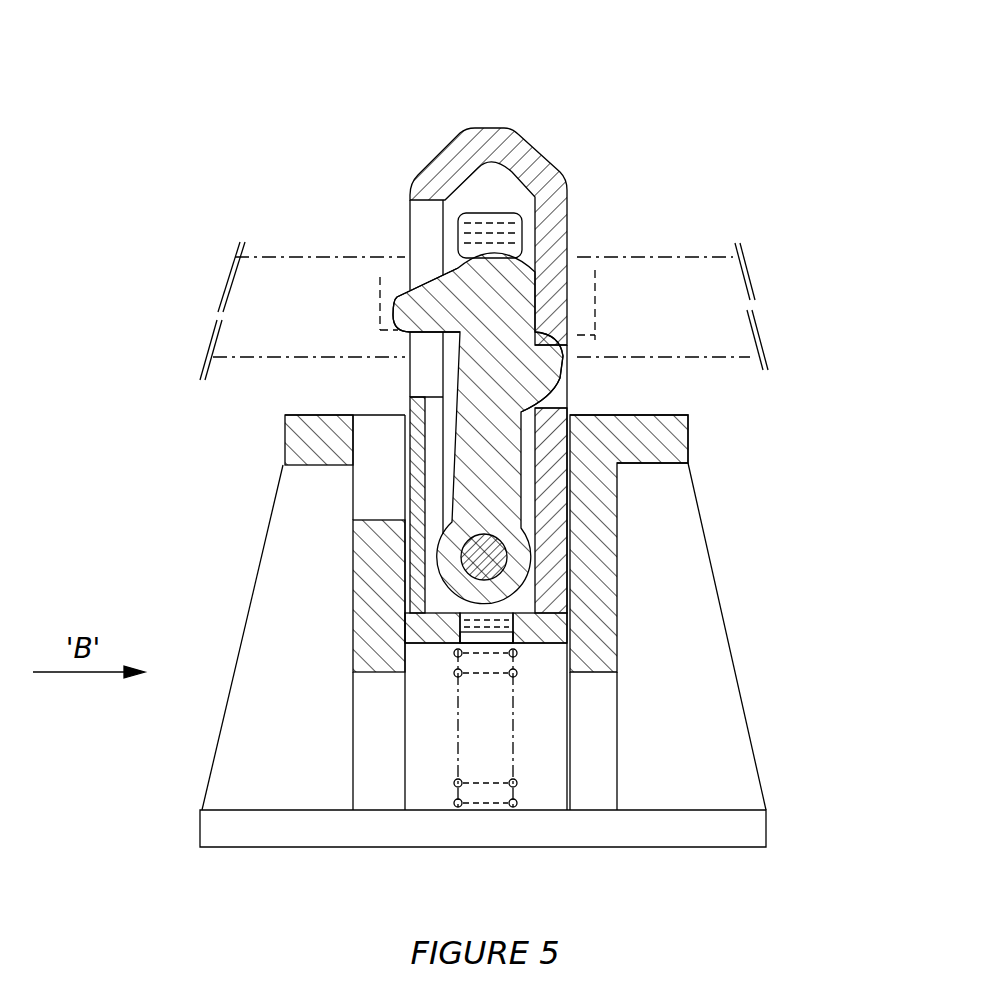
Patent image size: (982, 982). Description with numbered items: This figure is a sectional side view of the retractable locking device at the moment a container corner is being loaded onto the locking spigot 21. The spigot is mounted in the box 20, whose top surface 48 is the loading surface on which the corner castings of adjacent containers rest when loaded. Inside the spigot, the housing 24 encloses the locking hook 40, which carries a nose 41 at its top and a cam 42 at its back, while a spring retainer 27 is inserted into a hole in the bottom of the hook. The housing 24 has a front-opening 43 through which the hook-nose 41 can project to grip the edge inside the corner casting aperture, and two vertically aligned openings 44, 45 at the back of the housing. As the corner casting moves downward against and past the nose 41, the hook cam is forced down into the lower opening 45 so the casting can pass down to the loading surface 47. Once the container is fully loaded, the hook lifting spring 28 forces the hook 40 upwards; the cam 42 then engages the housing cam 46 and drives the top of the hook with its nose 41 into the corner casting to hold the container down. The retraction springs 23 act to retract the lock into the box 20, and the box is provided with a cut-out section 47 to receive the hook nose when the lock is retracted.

The box 20 is at (593, 532).
The locking spigot 21 is at (487, 192).
The retraction springs 23 is at (513, 677).
The housing 24 is at (557, 202).
The spring retainer 27 is at (490, 565).
The hook lifting spring 28 is at (513, 625).
The locking hook 40 is at (440, 278).
The nose 41 is at (413, 292).
The cam 42 is at (567, 393).
The front-opening 43 is at (422, 232).
The upper opening 44 is at (543, 318).
The lower opening 45 is at (557, 404).
The housing cam 46 is at (553, 363).
The cut-out section 47 is at (378, 488).
The top surface 48 is at (293, 432).